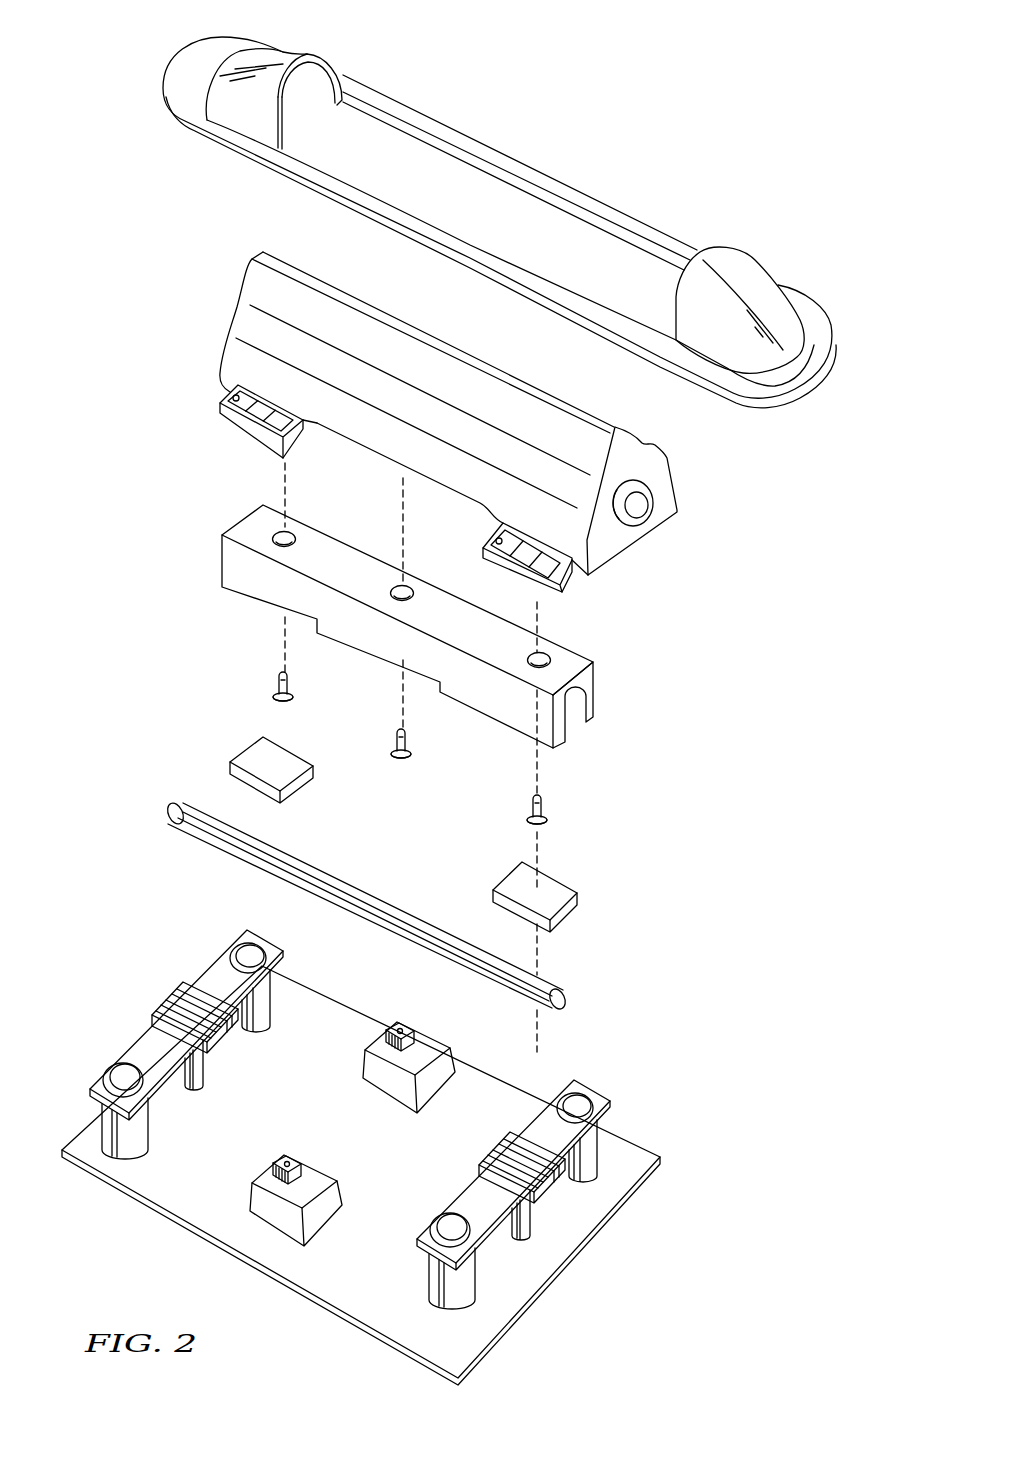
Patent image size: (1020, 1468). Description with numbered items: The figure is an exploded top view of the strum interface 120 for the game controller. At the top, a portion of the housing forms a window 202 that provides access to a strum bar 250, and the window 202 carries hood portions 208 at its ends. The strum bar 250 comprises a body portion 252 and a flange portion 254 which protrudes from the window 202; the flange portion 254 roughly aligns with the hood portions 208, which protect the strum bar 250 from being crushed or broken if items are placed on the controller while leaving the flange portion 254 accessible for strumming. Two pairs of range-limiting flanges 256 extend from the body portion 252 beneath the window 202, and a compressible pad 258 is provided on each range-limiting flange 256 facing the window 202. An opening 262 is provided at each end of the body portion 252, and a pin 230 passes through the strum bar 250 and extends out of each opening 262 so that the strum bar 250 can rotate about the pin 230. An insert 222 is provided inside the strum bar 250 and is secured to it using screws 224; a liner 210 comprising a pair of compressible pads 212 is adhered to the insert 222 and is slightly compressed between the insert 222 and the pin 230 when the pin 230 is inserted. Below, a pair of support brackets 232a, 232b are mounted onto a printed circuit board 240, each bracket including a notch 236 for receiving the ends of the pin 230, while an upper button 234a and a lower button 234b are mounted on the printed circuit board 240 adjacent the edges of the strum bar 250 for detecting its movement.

The strum interface 120 is at (127, 580).
The window 202 is at (822, 352).
The hood portions 208 is at (283, 58).
The liner 210 is at (212, 730).
The compressible pads 212 is at (289, 770).
The insert 222 is at (590, 685).
The screws 224 is at (280, 685).
The pin 230 is at (563, 999).
The support bracket 232a is at (138, 1050).
The support bracket 232b is at (603, 1098).
The upper button 234a is at (325, 1212).
The lower button 234b is at (436, 1076).
The notch 236 is at (177, 1004).
The printed circuit board 240 is at (579, 1222).
The strum bar 250 is at (765, 492).
The body portion 252 is at (660, 477).
The flange portion 254 is at (573, 397).
The range-limiting flanges 256 is at (240, 430).
The compressible pad 258 is at (235, 400).
The opening 262 is at (638, 518).